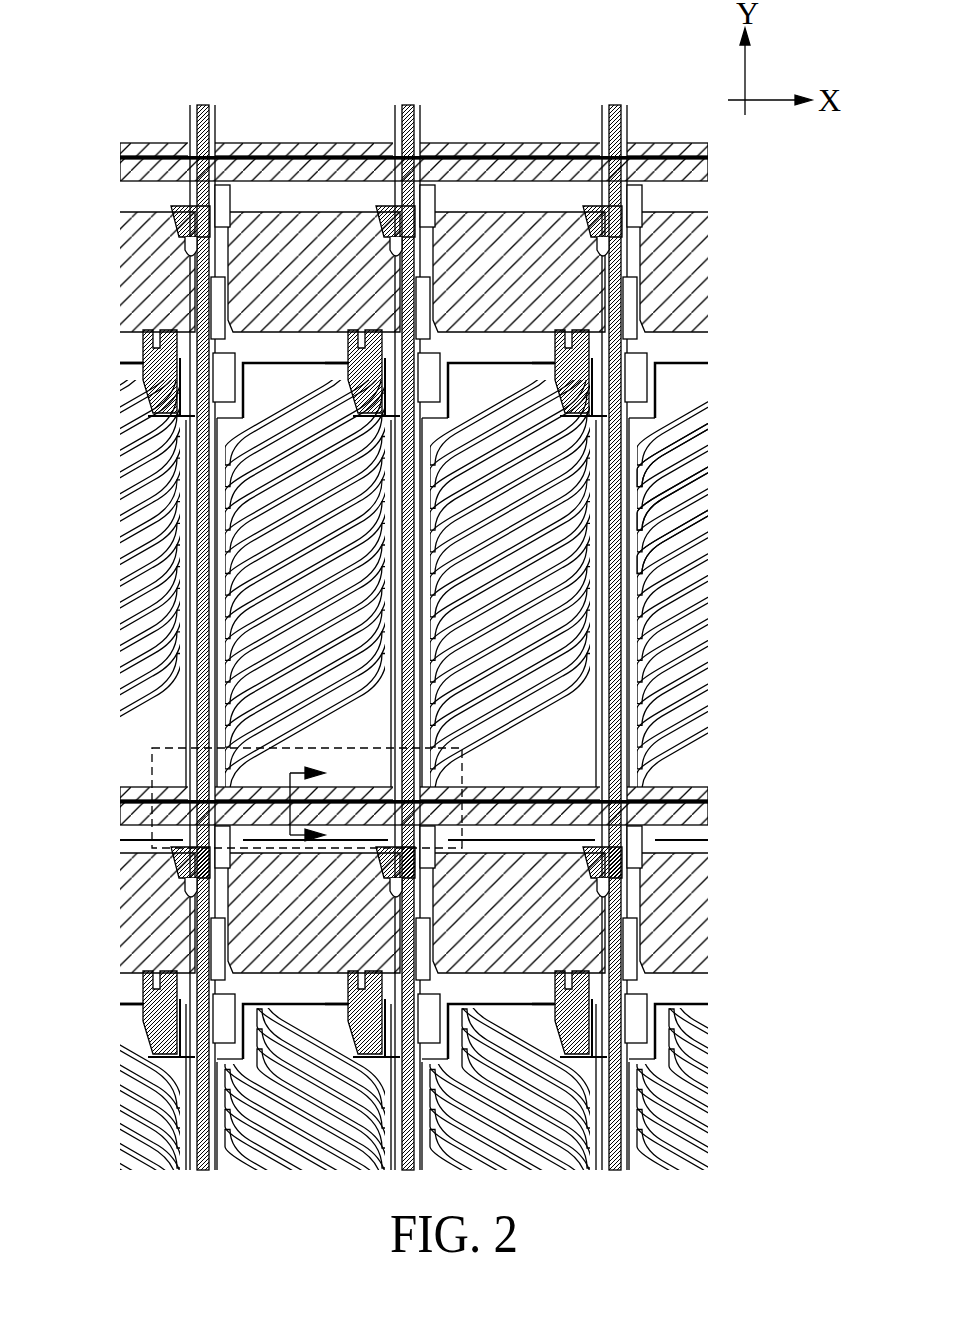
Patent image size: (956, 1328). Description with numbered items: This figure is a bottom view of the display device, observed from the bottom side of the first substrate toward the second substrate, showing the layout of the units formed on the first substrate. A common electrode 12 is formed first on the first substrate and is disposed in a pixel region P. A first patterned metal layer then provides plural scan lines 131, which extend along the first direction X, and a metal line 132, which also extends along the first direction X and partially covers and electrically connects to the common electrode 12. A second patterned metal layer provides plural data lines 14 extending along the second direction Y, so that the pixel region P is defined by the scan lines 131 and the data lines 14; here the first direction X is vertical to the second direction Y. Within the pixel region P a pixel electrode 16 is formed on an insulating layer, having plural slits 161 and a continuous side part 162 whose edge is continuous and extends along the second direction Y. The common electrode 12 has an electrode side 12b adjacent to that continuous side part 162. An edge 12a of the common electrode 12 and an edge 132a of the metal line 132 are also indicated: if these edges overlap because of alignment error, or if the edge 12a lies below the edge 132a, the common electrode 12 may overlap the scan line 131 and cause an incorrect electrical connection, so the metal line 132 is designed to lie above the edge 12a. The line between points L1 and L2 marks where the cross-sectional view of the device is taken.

The data line 14 is at (409, 128).
The metal line 132 is at (708, 170).
The scan line 131 is at (708, 262).
The common electrode 12 is at (407, 797).
The pixel electrode 16 is at (708, 397).
The slit 161 is at (705, 441).
The continuous side part 162 is at (637, 507).
The electrode side 12b is at (637, 560).
The pixel region P is at (262, 628).
The edge of the common electrode 12a is at (708, 812).
The edge of the metal line 132a is at (708, 843).
The line L1 is at (323, 795).
The line L2 is at (323, 833).